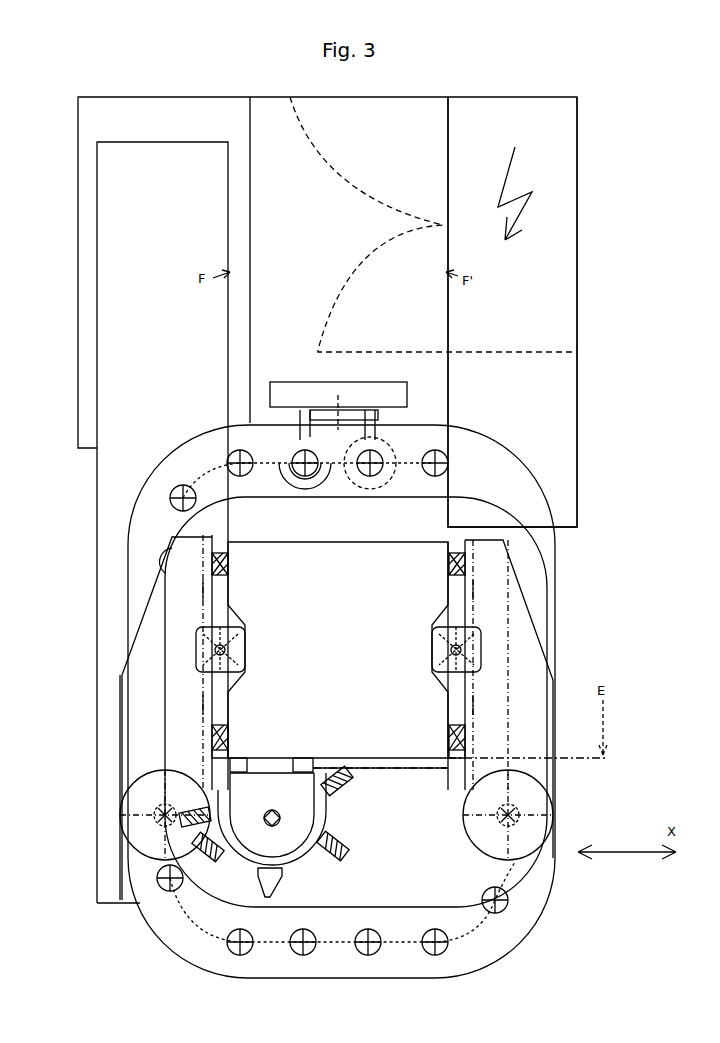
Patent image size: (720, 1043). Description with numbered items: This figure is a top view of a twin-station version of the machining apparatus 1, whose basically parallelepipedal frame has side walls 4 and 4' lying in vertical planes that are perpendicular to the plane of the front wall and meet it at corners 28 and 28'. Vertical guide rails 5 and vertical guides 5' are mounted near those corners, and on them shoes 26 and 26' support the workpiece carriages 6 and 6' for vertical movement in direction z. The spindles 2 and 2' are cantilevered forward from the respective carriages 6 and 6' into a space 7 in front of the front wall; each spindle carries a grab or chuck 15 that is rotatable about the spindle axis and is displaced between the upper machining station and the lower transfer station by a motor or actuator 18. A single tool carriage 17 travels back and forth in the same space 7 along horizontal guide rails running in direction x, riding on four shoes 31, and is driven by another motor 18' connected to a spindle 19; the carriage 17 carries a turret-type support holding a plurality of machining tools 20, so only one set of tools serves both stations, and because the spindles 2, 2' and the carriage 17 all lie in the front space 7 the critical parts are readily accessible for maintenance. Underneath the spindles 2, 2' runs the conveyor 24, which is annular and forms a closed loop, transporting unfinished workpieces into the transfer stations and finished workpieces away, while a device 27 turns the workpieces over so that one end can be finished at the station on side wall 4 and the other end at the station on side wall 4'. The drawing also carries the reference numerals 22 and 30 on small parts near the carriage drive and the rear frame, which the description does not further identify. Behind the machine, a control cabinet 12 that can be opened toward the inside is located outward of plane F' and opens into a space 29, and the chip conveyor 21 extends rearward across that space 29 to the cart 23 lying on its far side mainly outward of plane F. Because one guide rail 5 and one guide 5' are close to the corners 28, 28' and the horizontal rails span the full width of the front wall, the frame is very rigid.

The machining apparatus 1 is at (403, 545).
The spindle 2 is at (145, 808).
The spindle 2' is at (547, 815).
The side wall 4 is at (279, 662).
The side wall 4' is at (509, 665).
The vertical guide rails 5 is at (338, 719).
The vertical guides 5' is at (338, 566).
The workpiece carriage 6 is at (140, 718).
The workpiece carriage 6' is at (522, 699).
The space 7 is at (440, 883).
The control cabinet 12 is at (552, 253).
The grab or chuck 15 is at (412, 767).
The tool carriage 17 is at (303, 810).
The motor or actuator 18 is at (234, 638).
The motor 18' is at (440, 643).
The spindle 19 is at (557, 443).
The machining tools 20 is at (347, 852).
The chip conveyor 21 is at (150, 258).
The base plate 22 is at (110, 874).
The cart 23 is at (145, 122).
The conveyor 24 is at (272, 960).
The shoes 26 is at (238, 647).
The shoes 26' is at (449, 661).
The device for turning the workpieces over 27 is at (318, 385).
The corner 28 is at (249, 744).
The corner 28' is at (422, 743).
The space 29 is at (292, 145).
The connector 30 is at (310, 780).
The shoes 31 is at (235, 777).